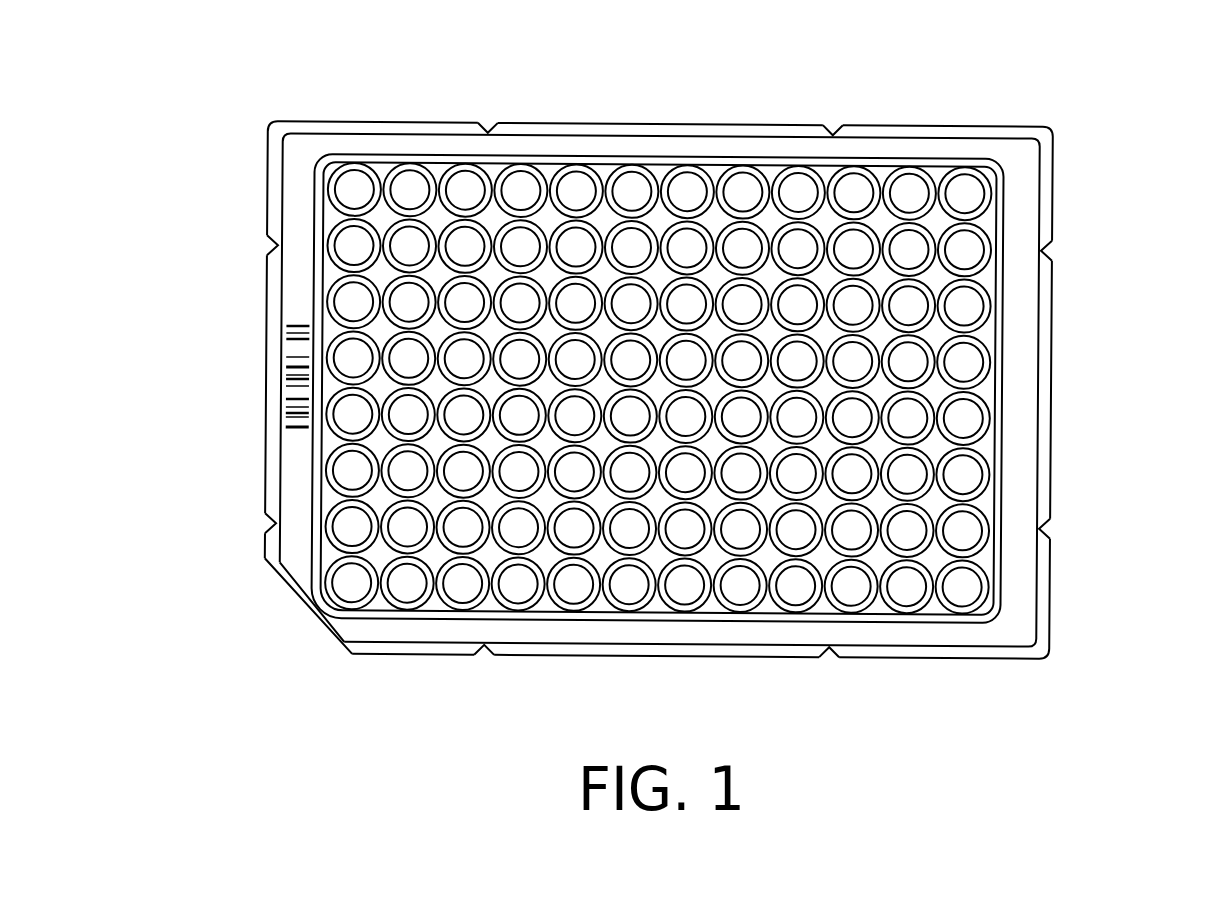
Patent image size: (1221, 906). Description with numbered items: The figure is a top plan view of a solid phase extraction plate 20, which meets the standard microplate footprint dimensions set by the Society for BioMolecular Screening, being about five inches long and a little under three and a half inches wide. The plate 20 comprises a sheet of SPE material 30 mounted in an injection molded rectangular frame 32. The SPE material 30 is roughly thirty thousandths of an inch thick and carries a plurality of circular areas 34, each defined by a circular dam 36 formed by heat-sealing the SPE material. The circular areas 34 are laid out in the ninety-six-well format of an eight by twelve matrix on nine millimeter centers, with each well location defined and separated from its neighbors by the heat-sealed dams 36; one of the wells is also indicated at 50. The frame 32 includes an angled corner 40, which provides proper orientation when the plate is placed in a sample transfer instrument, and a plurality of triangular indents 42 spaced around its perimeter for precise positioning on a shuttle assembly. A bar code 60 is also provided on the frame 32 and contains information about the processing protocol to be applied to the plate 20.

The solid phase extraction plate 20 is at (1003, 711).
The sheet of SPE material 30 is at (935, 335).
The rectangular frame 32 is at (1044, 313).
The circular area 34 is at (628, 190).
The circular dam 36 is at (648, 176).
The angled corner 40 is at (296, 622).
The triangular indent 42 is at (488, 102).
The well 50 is at (965, 473).
The bar code 60 is at (292, 362).